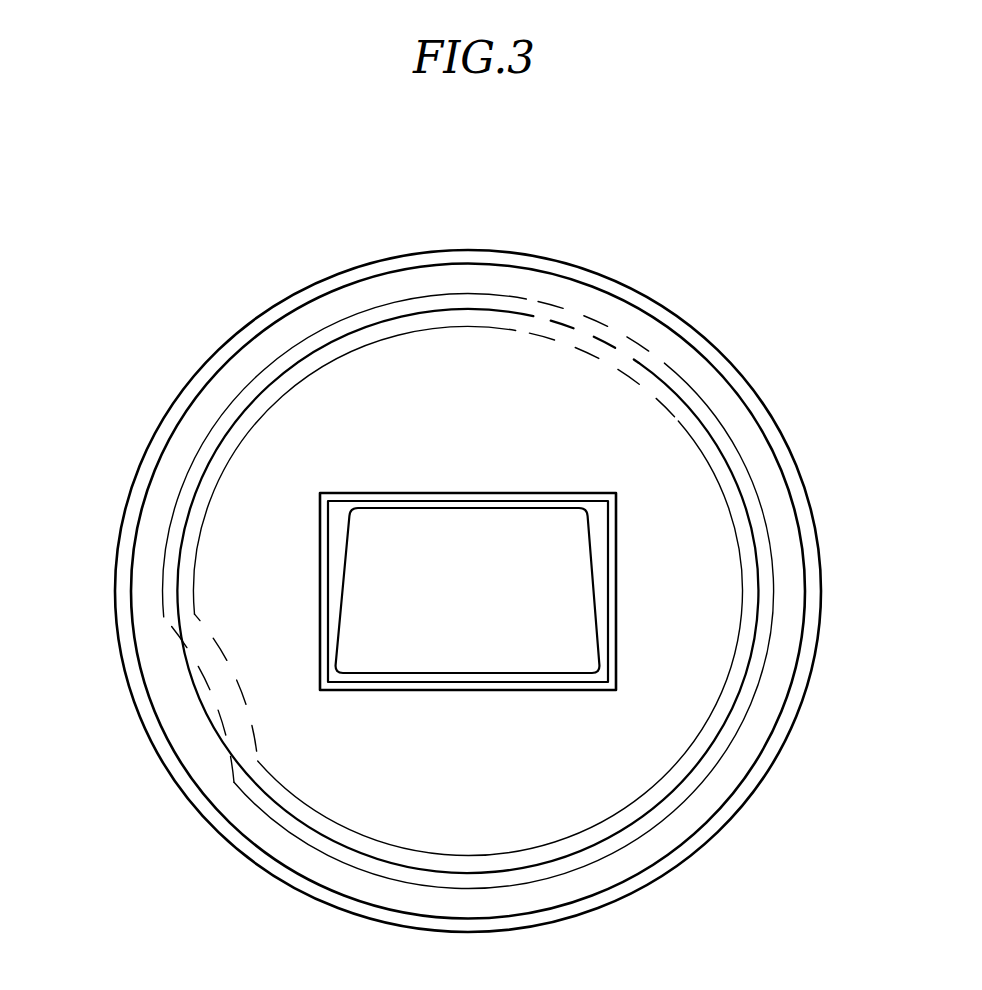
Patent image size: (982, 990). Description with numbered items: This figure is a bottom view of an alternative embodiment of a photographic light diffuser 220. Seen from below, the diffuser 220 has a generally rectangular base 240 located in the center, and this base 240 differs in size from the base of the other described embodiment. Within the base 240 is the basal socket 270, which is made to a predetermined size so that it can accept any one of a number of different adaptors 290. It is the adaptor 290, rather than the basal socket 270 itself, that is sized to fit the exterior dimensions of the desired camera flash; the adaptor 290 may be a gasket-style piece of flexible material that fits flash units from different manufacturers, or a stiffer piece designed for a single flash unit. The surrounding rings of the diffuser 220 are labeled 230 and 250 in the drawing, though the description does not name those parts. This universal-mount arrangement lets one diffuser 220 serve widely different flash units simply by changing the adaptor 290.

The diffuser 220 is at (178, 866).
The inner reflector surface 230 is at (693, 480).
The generally rectangular base 240 is at (617, 662).
The outer rim 250 is at (652, 838).
The basal socket 270 is at (290, 683).
The adaptor 290 is at (337, 510).